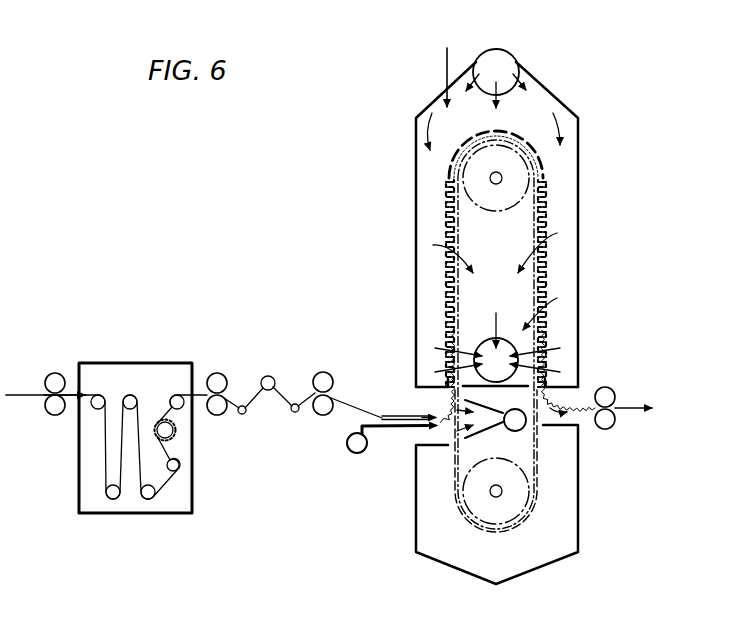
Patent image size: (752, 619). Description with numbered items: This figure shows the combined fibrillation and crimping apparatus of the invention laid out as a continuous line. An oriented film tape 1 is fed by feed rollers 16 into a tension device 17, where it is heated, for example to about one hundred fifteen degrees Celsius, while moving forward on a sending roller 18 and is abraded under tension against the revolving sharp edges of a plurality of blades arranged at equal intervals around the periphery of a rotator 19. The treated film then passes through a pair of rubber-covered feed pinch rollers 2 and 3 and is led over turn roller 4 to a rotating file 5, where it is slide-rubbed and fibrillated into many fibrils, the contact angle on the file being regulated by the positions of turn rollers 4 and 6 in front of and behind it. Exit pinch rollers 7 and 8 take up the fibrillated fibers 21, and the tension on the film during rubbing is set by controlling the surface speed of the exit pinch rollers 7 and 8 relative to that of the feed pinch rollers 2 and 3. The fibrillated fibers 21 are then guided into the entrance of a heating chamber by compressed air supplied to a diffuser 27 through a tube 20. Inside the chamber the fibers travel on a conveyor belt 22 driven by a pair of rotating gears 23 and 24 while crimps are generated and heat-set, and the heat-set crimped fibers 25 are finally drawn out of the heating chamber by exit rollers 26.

The film tape 1 is at (70, 408).
The feed rollers 16 is at (49, 377).
The tension device 17 is at (147, 363).
The sending roller 18 is at (137, 393).
The rotator 19 is at (172, 437).
The feed pinch roller 2 is at (214, 415).
The feed pinch roller 3 is at (217, 373).
The turn roller 4 is at (242, 414).
The rotating file 5 is at (268, 376).
The turn roller 6 is at (292, 412).
The exit pinch roller 7 is at (320, 415).
The exit pinch roller 8 is at (323, 372).
The tube 20 is at (356, 453).
The fibrillated fibers 21 is at (383, 413).
The diffuser 27 is at (393, 430).
The conveyor belt 22 is at (543, 198).
The rotating gear 23 is at (543, 162).
The rotating gear 24 is at (528, 497).
The heat-set crimped fibers 25 is at (578, 400).
The exit rollers 26 is at (609, 392).